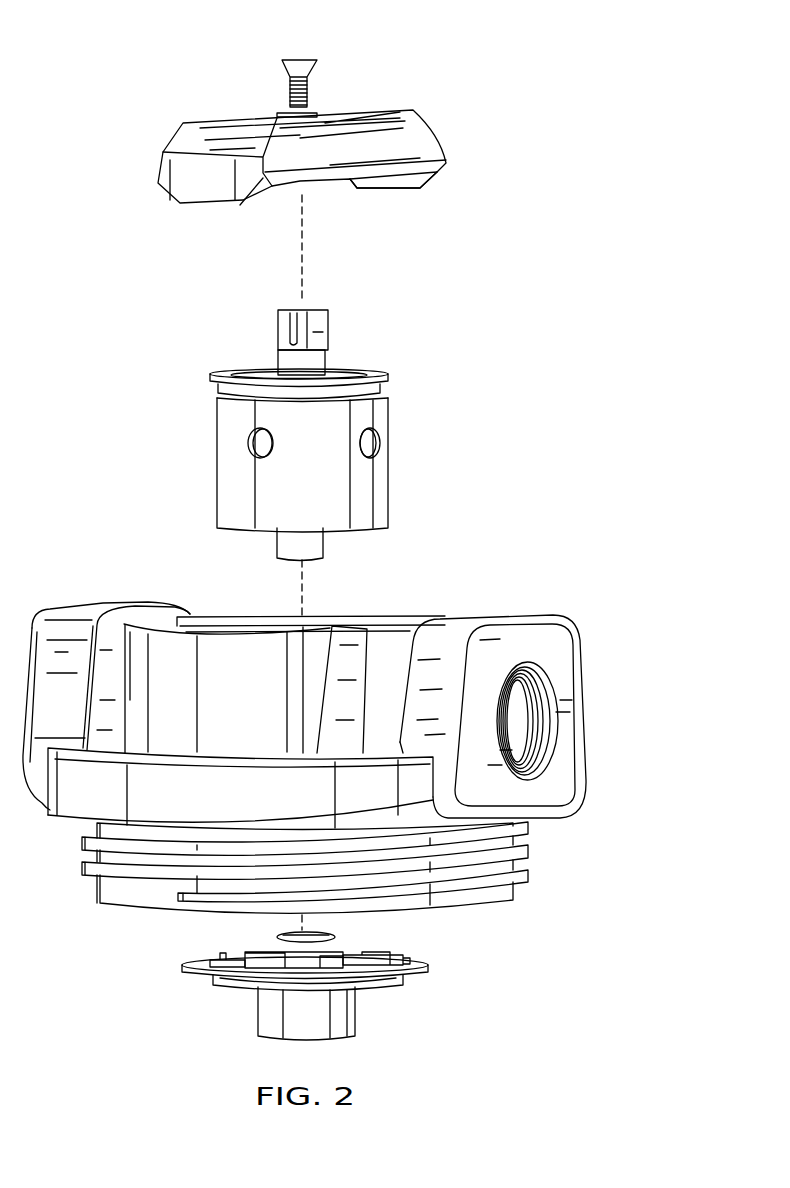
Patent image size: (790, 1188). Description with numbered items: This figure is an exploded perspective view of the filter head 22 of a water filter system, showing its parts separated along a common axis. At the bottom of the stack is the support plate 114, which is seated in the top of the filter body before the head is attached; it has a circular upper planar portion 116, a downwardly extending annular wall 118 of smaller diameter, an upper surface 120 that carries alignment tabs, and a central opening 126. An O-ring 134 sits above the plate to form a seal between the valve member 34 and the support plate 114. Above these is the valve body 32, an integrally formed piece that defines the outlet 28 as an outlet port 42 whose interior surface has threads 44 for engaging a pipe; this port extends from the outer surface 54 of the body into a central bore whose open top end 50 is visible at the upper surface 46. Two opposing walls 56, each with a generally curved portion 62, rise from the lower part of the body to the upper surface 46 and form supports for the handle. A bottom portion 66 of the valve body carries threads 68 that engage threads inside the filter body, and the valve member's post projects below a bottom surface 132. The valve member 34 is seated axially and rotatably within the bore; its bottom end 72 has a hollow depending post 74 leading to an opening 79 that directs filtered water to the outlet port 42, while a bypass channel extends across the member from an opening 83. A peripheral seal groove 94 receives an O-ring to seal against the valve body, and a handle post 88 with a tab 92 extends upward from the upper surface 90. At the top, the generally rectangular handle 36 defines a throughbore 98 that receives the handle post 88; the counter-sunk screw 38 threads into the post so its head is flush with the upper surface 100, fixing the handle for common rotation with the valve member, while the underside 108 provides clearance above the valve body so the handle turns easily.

The filter head 22 is at (318, 688).
The outlet 28 is at (507, 696).
The valve body 32 is at (106, 679).
The valve member 34 is at (280, 432).
The handle 36 is at (413, 137).
The screw 38 is at (305, 57).
The outlet port 42 is at (554, 721).
The threads 44 is at (538, 722).
The upper surface 46 is at (368, 540).
The open top end 50 is at (265, 628).
The outer surface 54 is at (495, 642).
The curved walls 56 is at (145, 697).
The curved portion 62 is at (220, 705).
The bottom portion 66 is at (347, 858).
The threads 68 is at (530, 878).
The bottom end 72 is at (400, 622).
The depending post 74 is at (275, 540).
The opening 79 is at (250, 443).
The opening 83 is at (379, 444).
The handle post 88 is at (325, 310).
The upper surface 90 is at (338, 367).
The tab 92 is at (292, 330).
The seal groove 94 is at (388, 390).
The throughbore 98 is at (283, 113).
The upper surface 100 is at (345, 108).
The underside 108 is at (390, 188).
The support plate 114 is at (309, 985).
The upper planar portion 116 is at (430, 961).
The annular wall 118 is at (357, 1012).
The upper surface 120 is at (192, 955).
The central opening 126 is at (340, 954).
The bottom surface 132 is at (105, 914).
The O-ring 134 is at (280, 935).